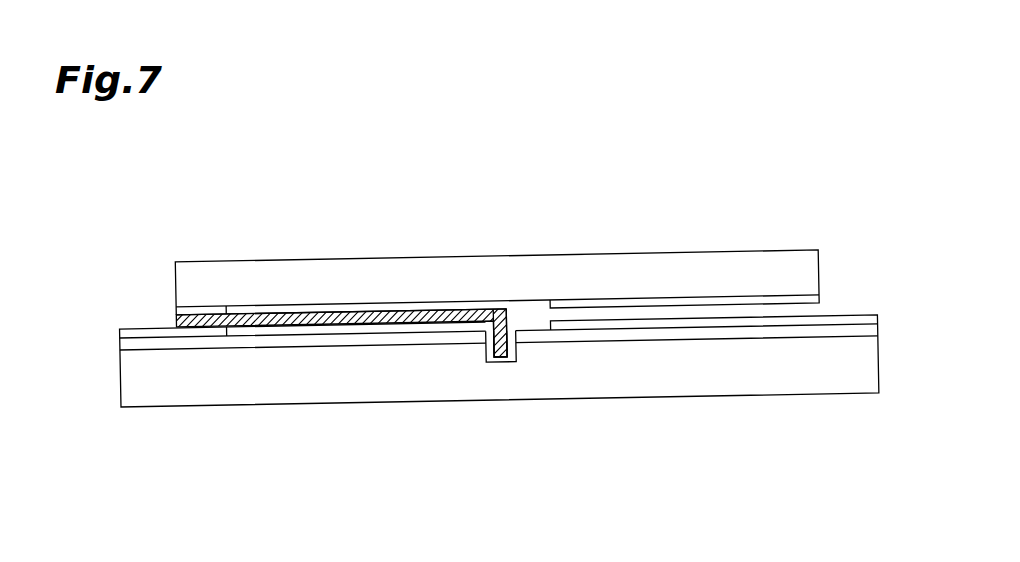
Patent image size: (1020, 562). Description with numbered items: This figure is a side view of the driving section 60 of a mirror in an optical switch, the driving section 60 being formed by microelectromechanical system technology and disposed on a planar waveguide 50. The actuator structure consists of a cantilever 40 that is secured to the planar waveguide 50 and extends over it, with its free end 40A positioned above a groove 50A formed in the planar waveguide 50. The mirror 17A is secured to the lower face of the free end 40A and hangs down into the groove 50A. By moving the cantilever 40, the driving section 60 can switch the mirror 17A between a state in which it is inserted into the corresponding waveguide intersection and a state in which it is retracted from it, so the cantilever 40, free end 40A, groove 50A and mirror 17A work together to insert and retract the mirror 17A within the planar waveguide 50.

The cantilever 40 is at (387, 302).
The free end 40A is at (509, 301).
The driving section 60 is at (176, 321).
The mirror 17A is at (486, 353).
The groove 50A is at (518, 353).
The planar waveguide 50 is at (314, 412).